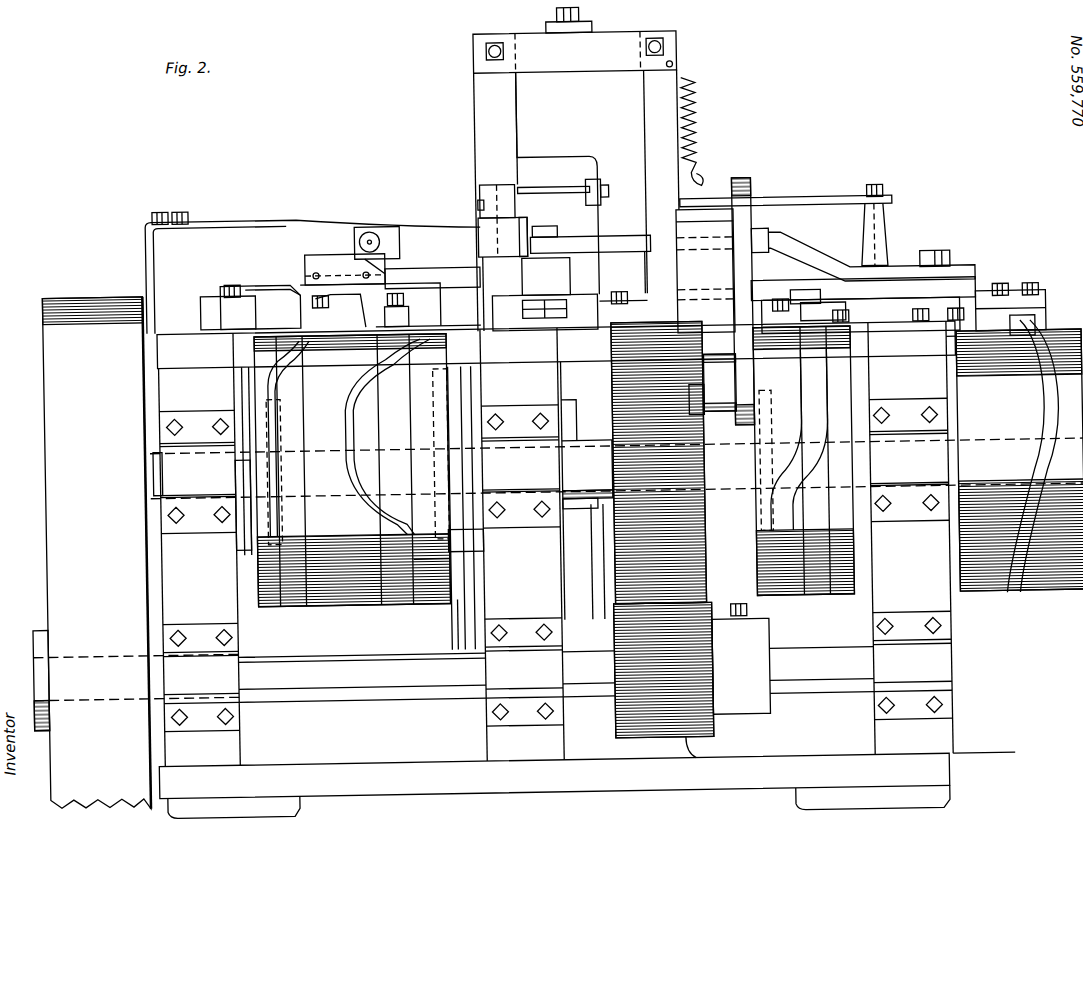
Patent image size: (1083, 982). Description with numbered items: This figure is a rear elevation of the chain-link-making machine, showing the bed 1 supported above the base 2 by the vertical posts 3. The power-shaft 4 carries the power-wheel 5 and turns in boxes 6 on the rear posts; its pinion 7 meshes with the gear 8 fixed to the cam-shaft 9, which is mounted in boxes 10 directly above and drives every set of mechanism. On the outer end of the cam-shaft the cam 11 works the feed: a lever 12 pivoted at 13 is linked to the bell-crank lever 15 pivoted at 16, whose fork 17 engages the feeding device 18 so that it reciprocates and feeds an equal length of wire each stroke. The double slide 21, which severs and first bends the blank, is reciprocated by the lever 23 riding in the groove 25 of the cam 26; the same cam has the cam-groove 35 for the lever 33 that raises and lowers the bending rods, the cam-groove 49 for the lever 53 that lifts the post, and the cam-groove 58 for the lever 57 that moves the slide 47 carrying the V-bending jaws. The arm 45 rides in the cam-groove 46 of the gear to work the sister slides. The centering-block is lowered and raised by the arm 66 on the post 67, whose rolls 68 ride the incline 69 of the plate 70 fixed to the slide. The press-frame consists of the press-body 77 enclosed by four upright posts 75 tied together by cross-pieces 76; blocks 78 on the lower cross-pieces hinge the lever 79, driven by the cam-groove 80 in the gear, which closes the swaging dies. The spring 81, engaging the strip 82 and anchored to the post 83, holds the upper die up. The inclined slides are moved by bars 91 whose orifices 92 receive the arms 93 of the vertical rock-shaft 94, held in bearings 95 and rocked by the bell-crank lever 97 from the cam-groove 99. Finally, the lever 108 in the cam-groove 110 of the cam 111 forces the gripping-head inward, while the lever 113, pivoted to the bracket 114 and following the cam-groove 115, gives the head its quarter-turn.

The bed 1 is at (556, 345).
The base 2 is at (375, 768).
The vertical posts 3 is at (556, 560).
The power-shaft 4 is at (453, 675).
The power-wheel 5 is at (89, 554).
The boxes 6 is at (558, 671).
The pinion 7 is at (615, 701).
The gear 8 is at (700, 582).
The cam-shaft 9 is at (153, 471).
The boxes 10 is at (616, 465).
The cam 11 is at (1014, 460).
The lever 12 is at (1043, 308).
The pivot 13 is at (1008, 291).
The bell-crank lever 15 is at (818, 261).
The pivot 16 is at (941, 257).
The fork 17 is at (550, 246).
The feeding device 18 is at (570, 291).
The double slide 21 is at (208, 299).
The lever 23 is at (271, 285).
The groove 25 is at (297, 374).
The cam 26 is at (352, 470).
The lever 33 is at (463, 511).
The cam-groove 35 is at (440, 478).
The arm 45 is at (719, 383).
The cam-groove 46 is at (697, 418).
The slide 47 is at (421, 266).
The cam-groove 49 is at (270, 496).
The lever 53 is at (243, 532).
The lever 57 is at (412, 316).
The cam-groove 58 is at (367, 394).
The arm 66 is at (464, 266).
The post 67 is at (153, 262).
The rolls 68 is at (376, 231).
The incline 69 is at (387, 270).
The plate 70 is at (345, 269).
The upright posts 75 is at (577, 200).
The bracing cross-pieces 76 is at (575, 39).
The press-body 77 is at (558, 183).
The blocks 78 is at (575, 612).
The lever 79 is at (590, 520).
The cam-groove 80 is at (615, 483).
The spring 81 is at (698, 101).
The strip 82 is at (808, 201).
The post 83 is at (886, 244).
The bars 91 is at (599, 180).
The orifices 92 is at (608, 200).
The arms 93 is at (551, 187).
The vertical rock-shaft 94 is at (508, 182).
The bearings 95 is at (503, 237).
The bell-crank lever 97 is at (457, 617).
The cam-groove 99 is at (420, 596).
The lever 108 is at (863, 305).
The cam-groove 110 is at (799, 439).
The cam 111 is at (804, 461).
The lever 113 is at (755, 284).
The bracket 114 is at (705, 271).
The cam-groove 115 is at (776, 424).